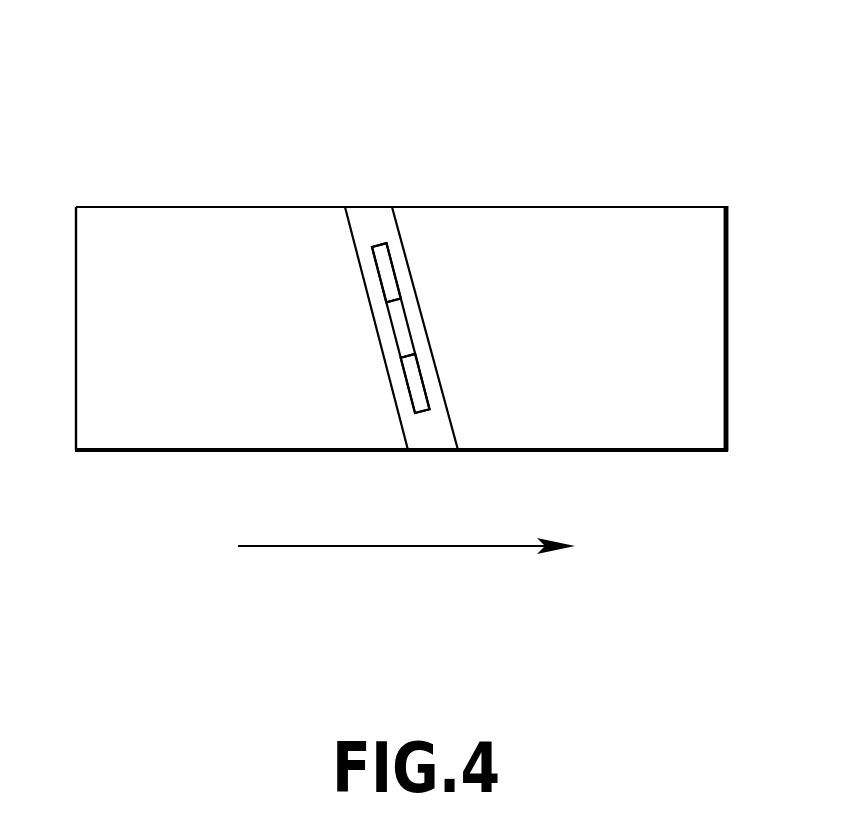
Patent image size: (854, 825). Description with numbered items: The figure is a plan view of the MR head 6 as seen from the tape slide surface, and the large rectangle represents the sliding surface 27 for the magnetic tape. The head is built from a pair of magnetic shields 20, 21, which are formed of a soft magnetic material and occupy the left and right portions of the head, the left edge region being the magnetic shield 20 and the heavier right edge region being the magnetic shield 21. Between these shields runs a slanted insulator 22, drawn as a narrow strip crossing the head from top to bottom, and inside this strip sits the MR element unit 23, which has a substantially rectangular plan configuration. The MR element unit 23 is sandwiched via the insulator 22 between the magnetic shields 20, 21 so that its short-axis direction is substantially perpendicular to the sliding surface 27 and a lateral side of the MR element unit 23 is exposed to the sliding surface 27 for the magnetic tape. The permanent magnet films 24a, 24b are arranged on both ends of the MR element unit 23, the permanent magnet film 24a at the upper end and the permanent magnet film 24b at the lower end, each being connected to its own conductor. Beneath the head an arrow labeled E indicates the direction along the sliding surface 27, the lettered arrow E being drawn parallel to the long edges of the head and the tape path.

The MR head 6 is at (600, 140).
The magnetic shield 20 is at (122, 417).
The magnetic shield 21 is at (660, 410).
The insulator 22 is at (362, 218).
The MR element unit 23 is at (398, 322).
The permanent magnet film 24a is at (385, 263).
The permanent magnet film 24b is at (415, 385).
The sliding surface 27 is at (165, 225).
The tape running direction E is at (315, 546).